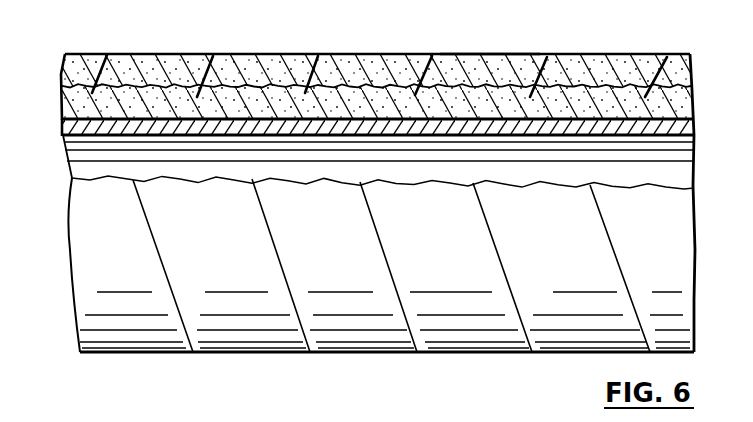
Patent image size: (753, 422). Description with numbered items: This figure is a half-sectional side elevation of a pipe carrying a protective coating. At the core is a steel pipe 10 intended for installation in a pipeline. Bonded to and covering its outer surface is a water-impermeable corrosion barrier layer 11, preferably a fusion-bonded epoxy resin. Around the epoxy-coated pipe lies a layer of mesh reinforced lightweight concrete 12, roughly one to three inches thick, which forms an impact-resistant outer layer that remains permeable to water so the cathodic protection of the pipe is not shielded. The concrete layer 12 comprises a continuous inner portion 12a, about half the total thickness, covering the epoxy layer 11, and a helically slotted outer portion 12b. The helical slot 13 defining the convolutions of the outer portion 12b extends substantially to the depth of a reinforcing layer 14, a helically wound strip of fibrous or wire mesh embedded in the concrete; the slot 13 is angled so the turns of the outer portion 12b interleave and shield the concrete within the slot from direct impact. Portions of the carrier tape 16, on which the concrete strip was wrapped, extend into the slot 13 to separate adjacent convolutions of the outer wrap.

The steel pipe 10 is at (664, 143).
The corrosion barrier layer 11 is at (613, 120).
The mesh reinforced lightweight concrete layer 12 is at (53, 73).
The continuous inner portion 12a is at (177, 100).
The helically slotted outer portion 12b is at (263, 68).
The helical slot 13 is at (322, 57).
The reinforcing layer 14 is at (515, 57).
The carrier tape 16 is at (160, 335).